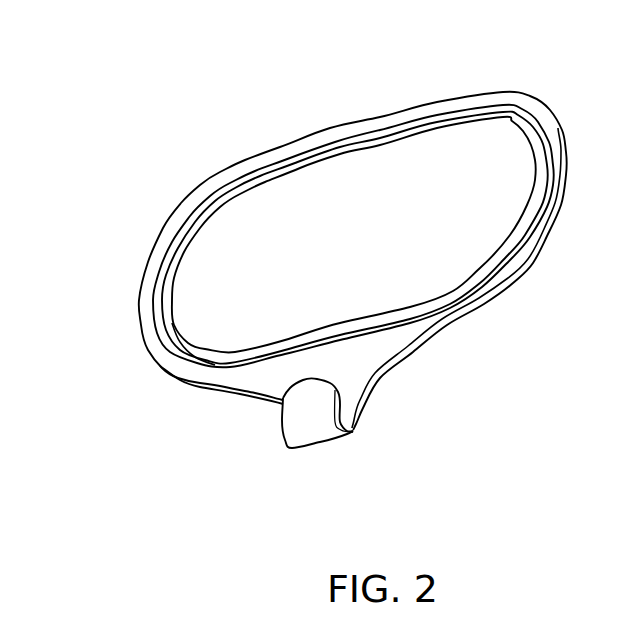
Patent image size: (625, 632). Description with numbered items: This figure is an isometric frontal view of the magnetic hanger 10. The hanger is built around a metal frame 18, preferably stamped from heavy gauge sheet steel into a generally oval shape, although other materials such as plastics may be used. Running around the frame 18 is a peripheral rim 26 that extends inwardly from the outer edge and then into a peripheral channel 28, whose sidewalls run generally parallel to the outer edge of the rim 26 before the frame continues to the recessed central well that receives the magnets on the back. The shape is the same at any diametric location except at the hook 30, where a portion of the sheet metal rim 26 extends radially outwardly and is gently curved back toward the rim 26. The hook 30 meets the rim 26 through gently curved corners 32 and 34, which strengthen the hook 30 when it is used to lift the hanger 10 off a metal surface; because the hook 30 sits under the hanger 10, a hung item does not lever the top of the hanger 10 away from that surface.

The magnetic hanger 10 is at (312, 266).
The frame 18 is at (490, 126).
The peripheral rim 26 is at (424, 112).
The peripheral channel 28 is at (540, 150).
The hook 30 is at (298, 427).
The gently curved corner 32 is at (423, 345).
The gently curved corner 34 is at (245, 388).